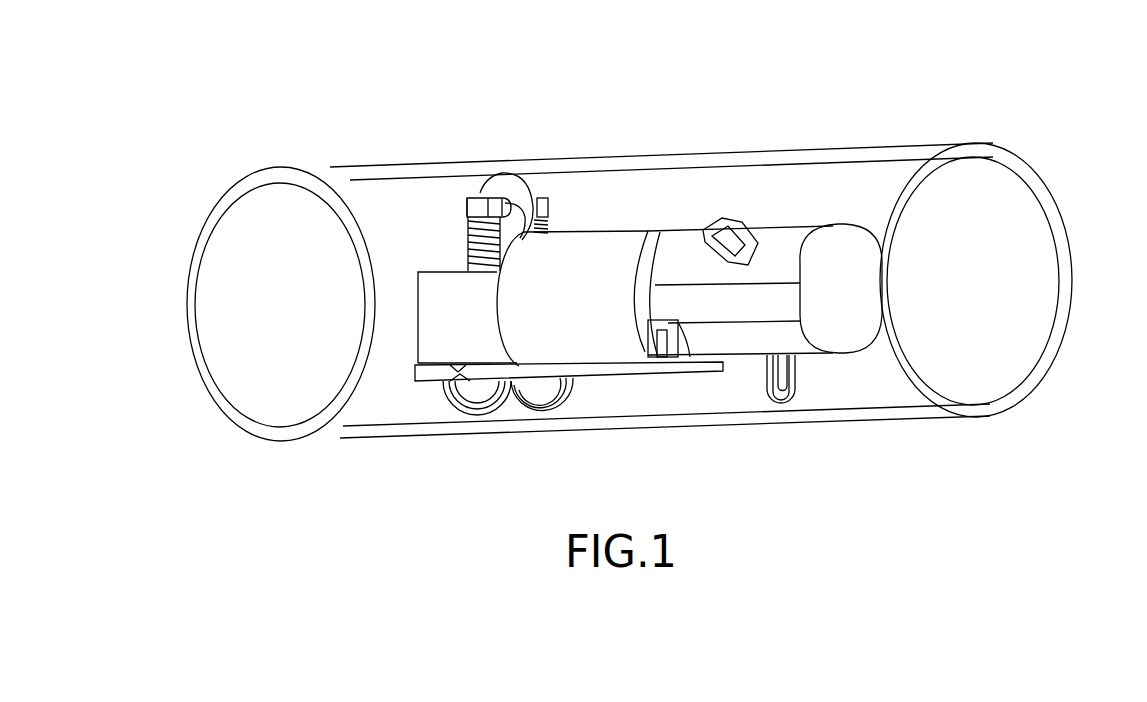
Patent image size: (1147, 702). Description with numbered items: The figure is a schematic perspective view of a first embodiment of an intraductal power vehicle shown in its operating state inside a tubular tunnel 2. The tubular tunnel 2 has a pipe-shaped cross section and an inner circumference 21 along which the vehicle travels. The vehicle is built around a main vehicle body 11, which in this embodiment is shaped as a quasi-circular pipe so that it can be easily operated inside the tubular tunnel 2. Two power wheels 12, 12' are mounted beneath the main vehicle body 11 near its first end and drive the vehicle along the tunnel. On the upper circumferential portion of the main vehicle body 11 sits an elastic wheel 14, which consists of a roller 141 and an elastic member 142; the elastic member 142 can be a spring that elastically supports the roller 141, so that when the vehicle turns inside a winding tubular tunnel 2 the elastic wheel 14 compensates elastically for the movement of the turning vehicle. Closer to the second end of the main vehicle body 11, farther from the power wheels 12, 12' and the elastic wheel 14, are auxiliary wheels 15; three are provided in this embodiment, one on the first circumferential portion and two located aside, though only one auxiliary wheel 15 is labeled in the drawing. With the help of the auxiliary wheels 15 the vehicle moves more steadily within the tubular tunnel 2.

The tubular tunnel 2 is at (845, 147).
The inner circumference 21 is at (1030, 283).
The main vehicle body 11 is at (597, 250).
The elastic wheel 14 is at (503, 92).
The roller 141 is at (498, 176).
The elastic member 142 is at (467, 243).
The power wheel 12 is at (477, 445).
The power wheel 12' is at (542, 443).
The auxiliary wheel 15 is at (774, 404).